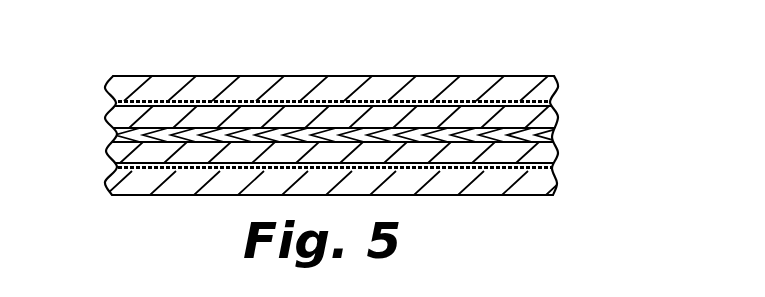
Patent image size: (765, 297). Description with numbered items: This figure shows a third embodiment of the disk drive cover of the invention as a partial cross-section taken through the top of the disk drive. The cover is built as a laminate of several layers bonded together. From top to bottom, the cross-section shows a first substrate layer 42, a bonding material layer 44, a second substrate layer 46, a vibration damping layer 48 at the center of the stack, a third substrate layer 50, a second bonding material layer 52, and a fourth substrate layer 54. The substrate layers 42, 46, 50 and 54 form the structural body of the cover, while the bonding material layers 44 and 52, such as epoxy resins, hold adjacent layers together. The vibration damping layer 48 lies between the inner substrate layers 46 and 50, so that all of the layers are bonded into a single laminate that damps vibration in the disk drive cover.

The substrate layer 42 is at (497, 82).
The bonding material layer 44 is at (115, 103).
The substrate layer 46 is at (540, 115).
The vibration damping layer 48 is at (117, 142).
The substrate layer 50 is at (540, 152).
The bonding material layer 52 is at (115, 168).
The substrate layer 54 is at (512, 187).